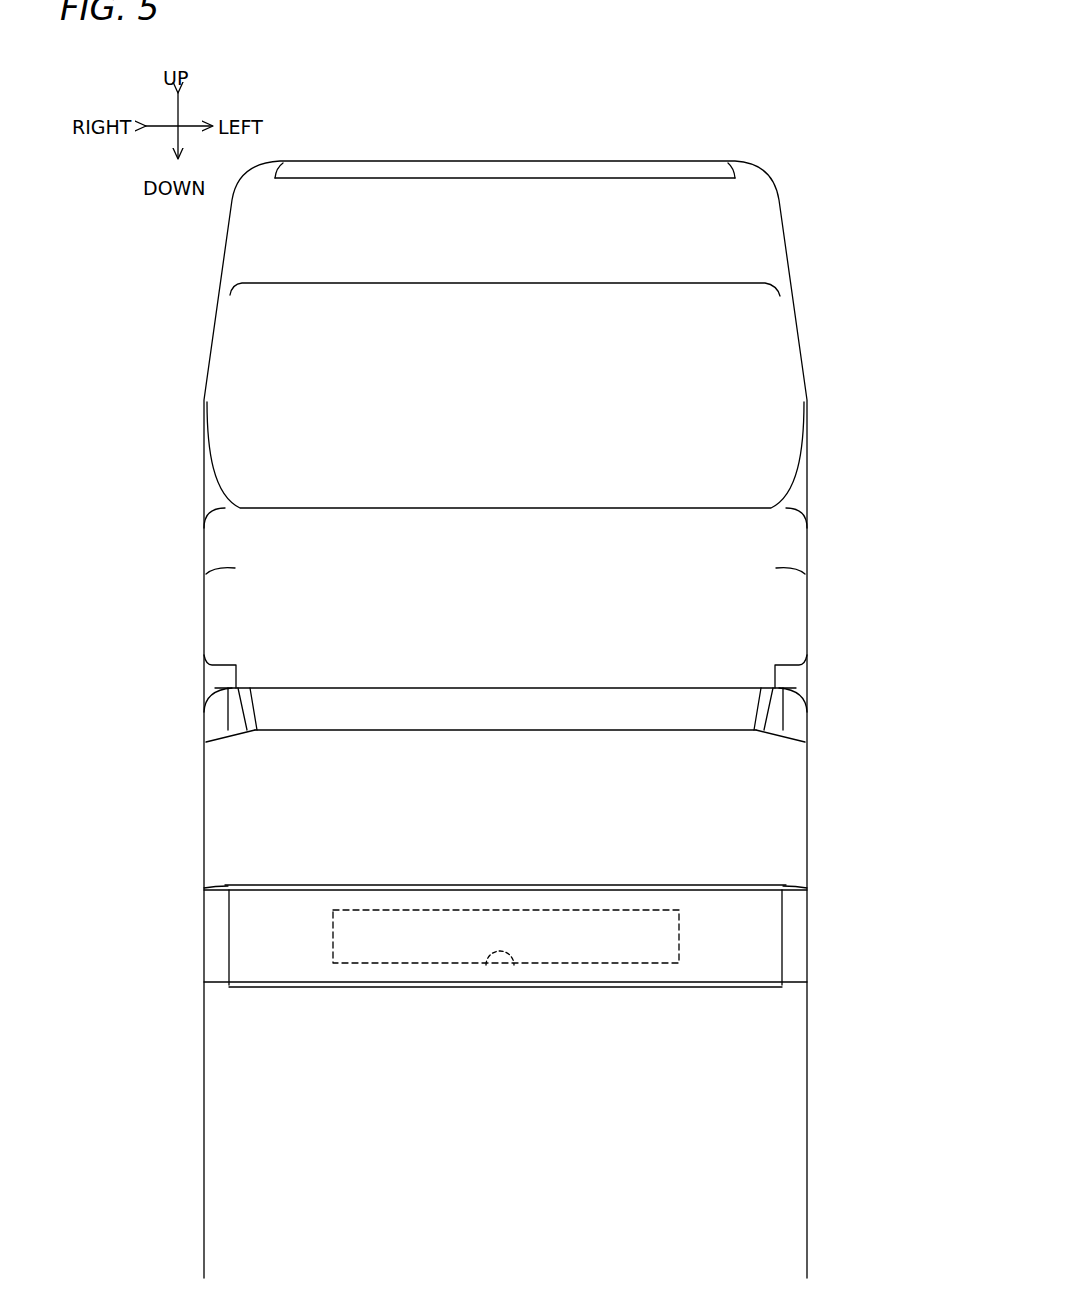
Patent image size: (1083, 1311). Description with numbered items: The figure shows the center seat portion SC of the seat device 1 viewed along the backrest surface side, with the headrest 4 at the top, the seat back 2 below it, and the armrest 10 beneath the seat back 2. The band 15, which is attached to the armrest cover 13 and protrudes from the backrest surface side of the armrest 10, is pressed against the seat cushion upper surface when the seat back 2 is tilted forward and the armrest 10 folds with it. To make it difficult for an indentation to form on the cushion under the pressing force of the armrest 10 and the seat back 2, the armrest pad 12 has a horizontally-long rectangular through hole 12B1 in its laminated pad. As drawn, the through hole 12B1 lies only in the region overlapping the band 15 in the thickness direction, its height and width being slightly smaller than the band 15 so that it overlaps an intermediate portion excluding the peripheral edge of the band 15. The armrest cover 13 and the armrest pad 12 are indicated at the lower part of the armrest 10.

The seat device 1 is at (675, 122).
The headrest 4 is at (731, 240).
The seat back 2 is at (760, 563).
The armrest 10 is at (758, 792).
The band 15 is at (702, 912).
The through hole 12B1 is at (515, 975).
The armrest pad 12 is at (730, 1099).
The armrest cover 13 is at (730, 1167).